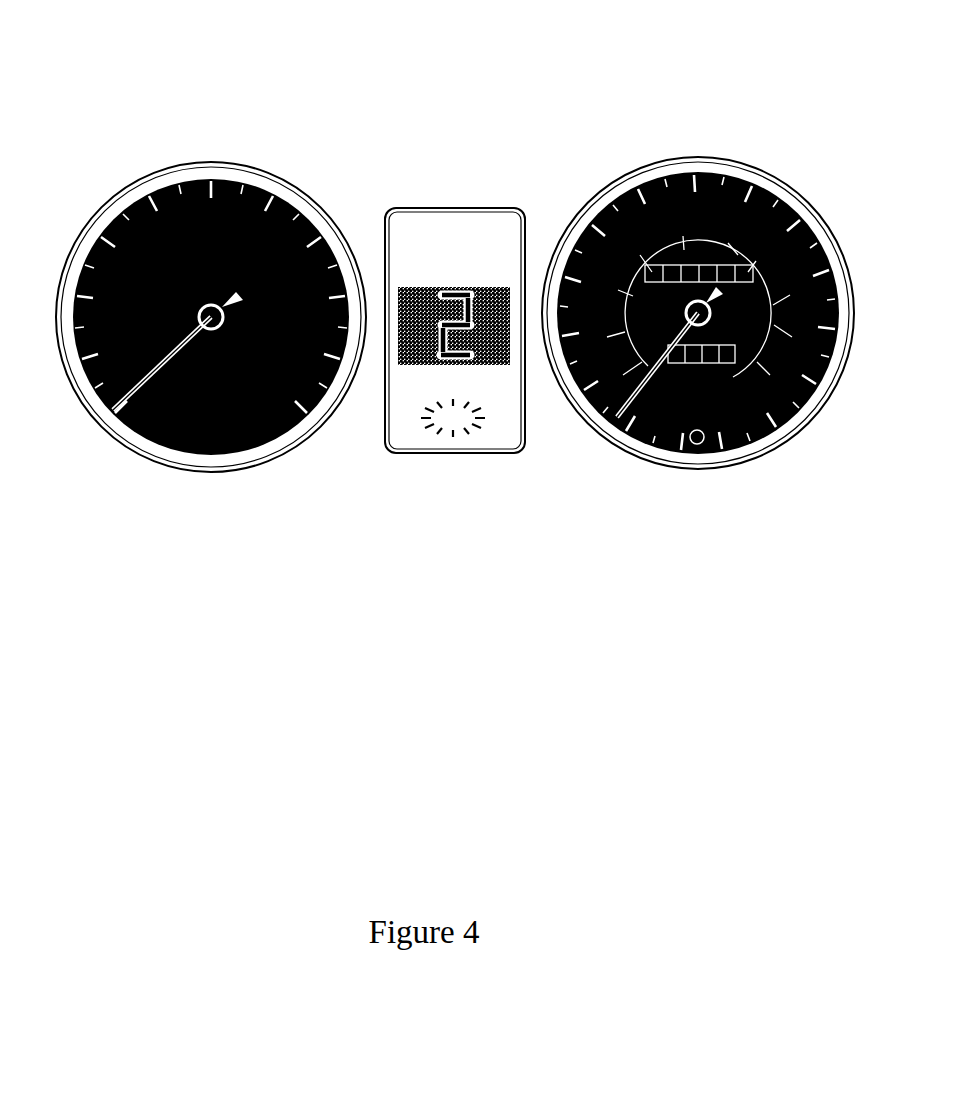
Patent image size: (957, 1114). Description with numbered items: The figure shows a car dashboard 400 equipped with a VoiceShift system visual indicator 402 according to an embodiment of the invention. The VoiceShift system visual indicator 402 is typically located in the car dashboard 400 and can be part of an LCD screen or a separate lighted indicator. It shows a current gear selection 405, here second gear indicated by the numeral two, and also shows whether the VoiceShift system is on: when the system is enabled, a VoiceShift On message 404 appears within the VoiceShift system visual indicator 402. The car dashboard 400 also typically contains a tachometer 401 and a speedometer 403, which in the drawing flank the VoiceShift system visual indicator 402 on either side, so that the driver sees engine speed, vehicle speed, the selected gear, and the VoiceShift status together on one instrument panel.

The car dashboard 400 is at (443, 843).
The tachometer 401 is at (213, 433).
The VoiceShift system visual indicator 402 is at (467, 453).
The speedometer 403 is at (702, 452).
The VoiceShift On message 404 is at (408, 420).
The current gear selection 405 is at (490, 327).